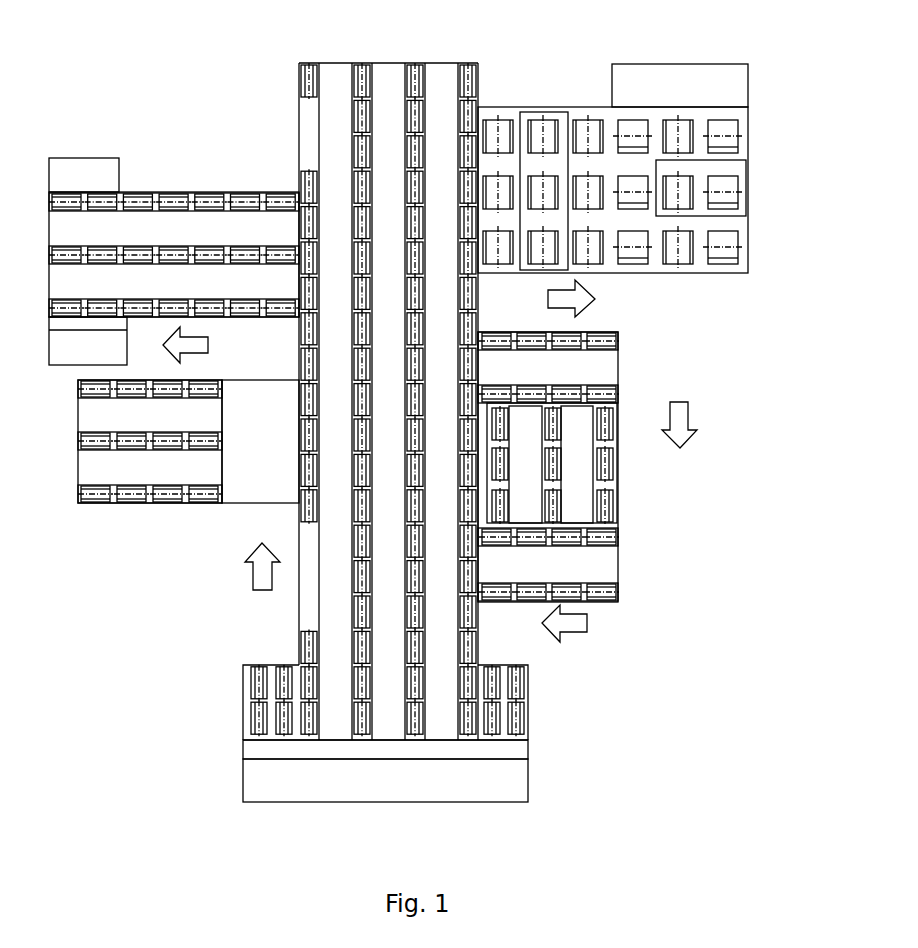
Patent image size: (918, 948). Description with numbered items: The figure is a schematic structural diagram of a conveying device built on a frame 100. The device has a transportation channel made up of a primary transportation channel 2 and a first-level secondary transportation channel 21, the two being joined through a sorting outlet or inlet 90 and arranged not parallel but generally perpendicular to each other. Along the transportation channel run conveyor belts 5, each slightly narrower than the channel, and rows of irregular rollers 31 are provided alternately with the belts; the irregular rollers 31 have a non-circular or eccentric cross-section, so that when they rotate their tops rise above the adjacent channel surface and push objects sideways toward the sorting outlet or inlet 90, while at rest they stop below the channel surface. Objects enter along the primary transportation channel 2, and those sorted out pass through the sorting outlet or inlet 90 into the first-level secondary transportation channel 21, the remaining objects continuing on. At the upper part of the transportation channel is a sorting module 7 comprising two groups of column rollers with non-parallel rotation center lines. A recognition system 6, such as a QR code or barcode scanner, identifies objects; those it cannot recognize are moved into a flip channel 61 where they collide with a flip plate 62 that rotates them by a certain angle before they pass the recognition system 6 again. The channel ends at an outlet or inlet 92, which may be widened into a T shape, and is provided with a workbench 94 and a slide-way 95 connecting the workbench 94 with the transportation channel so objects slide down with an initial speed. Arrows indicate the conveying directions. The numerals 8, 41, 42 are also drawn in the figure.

The primary transportation channel 2 is at (466, 660).
The conveyor belt 5 is at (450, 70).
The recognition system 6 is at (614, 333).
The sorting module 7 is at (785, 202).
The processing station 8 is at (545, 112).
The first-level secondary transportation channel 21 is at (236, 186).
The irregular roller 31 is at (355, 52).
The buffer station 41 is at (155, 148).
The buffer station 42 is at (800, 69).
The flip channel 61 is at (660, 490).
The flip plate 62 is at (567, 463).
The sorting outlet or inlet 90 is at (298, 190).
The outlet or inlet 92 is at (577, 733).
The workbench 94 is at (580, 774).
The slide-way 95 is at (252, 753).
The frame 100 is at (298, 643).